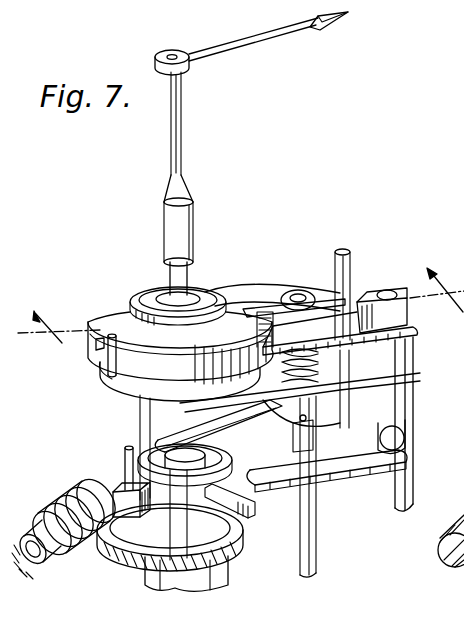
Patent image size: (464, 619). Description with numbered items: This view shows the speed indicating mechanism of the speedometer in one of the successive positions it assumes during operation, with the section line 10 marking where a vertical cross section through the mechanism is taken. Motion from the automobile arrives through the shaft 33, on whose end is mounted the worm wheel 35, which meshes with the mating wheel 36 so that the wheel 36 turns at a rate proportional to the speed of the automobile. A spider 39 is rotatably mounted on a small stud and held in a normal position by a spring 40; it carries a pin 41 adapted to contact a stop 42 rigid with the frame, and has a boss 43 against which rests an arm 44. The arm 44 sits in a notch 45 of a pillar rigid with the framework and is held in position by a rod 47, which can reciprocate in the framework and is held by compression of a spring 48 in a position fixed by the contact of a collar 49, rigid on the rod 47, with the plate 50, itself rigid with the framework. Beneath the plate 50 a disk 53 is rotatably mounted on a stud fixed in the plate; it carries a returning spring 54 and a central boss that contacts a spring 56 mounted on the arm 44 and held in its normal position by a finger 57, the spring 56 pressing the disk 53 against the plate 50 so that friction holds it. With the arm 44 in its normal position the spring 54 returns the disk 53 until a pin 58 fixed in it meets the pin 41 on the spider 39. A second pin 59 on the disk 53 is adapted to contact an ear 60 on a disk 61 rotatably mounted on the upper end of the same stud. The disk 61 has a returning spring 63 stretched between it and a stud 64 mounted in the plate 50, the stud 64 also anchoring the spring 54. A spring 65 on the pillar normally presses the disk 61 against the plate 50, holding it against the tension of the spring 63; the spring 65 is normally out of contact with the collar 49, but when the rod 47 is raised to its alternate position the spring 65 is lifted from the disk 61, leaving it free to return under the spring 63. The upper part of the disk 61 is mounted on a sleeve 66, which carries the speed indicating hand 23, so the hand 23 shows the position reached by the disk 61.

The section line 10 is at (239, 315).
The speed indicating hand 23 is at (265, 38).
The shaft 33 is at (46, 560).
The worm wheel 35 is at (70, 506).
The mating wheel 36 is at (136, 549).
The spider 39 is at (250, 542).
The spring 40 is at (158, 582).
The pin 41 is at (128, 466).
The stop 42 is at (346, 494).
The boss 43 is at (192, 562).
The arm 44 is at (311, 423).
The notch 45 is at (407, 376).
The rod 47 is at (318, 553).
The spring 48 is at (300, 364).
The collar 49 is at (300, 296).
The plate 50 is at (418, 338).
The disk 53 is at (102, 378).
The returning spring 54 is at (135, 404).
The spring 56 is at (150, 432).
The finger 57 is at (272, 428).
The pin 58 is at (136, 425).
The second pin 59 is at (105, 362).
The ear 60 is at (98, 349).
The disk 61 is at (120, 312).
The returning spring 63 is at (210, 295).
The stud 64 is at (348, 301).
The spring 65 is at (274, 305).
The sleeve 66 is at (175, 272).